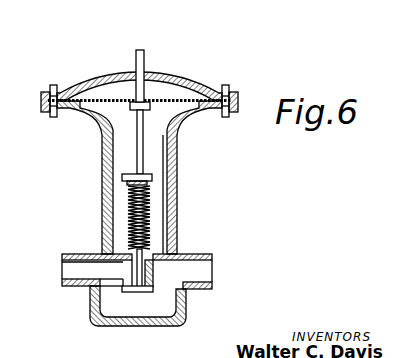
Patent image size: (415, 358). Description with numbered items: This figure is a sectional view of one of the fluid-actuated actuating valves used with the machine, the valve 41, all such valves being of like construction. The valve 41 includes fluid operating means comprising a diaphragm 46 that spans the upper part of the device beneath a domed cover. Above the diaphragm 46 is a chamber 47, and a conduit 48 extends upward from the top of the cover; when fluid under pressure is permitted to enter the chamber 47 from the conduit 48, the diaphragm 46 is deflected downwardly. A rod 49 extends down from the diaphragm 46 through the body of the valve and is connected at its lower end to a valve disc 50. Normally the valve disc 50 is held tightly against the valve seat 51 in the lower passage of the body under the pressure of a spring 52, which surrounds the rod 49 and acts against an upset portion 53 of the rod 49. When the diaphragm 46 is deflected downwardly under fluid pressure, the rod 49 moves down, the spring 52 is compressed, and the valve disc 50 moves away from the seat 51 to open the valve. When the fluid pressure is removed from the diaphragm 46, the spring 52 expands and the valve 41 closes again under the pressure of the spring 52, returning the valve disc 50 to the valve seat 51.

The actuating valve 41 is at (74, 175).
The diaphragm 46 is at (108, 105).
The chamber 47 is at (172, 95).
The conduit 48 is at (144, 63).
The rod 49 is at (138, 147).
The valve disc 50 is at (137, 292).
The valve seat 51 is at (120, 272).
The spring 52 is at (146, 209).
The upset portion 53 is at (153, 179).